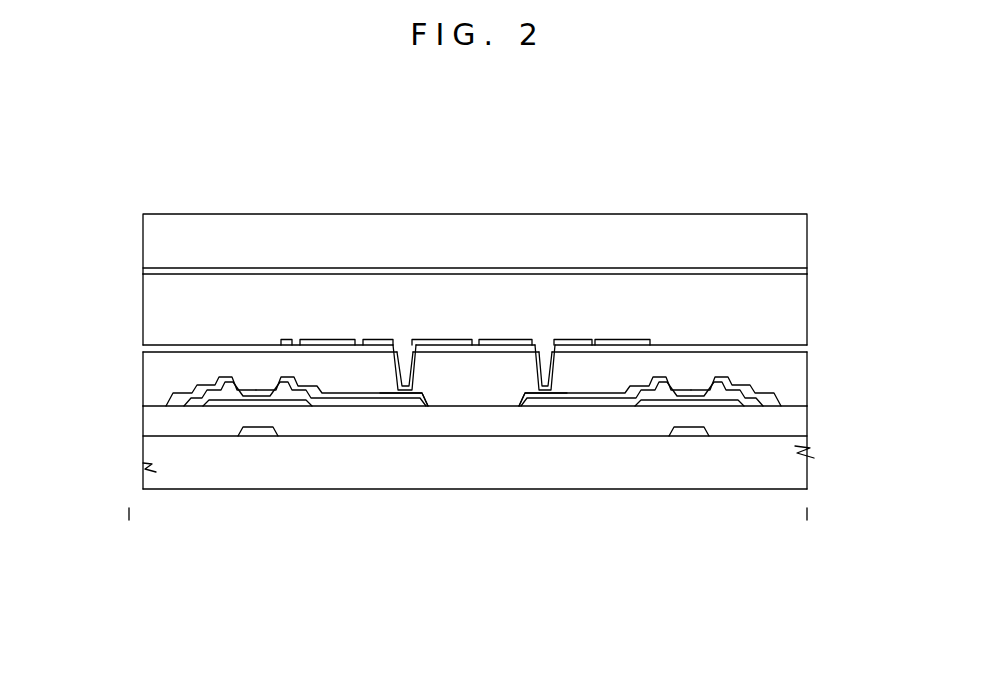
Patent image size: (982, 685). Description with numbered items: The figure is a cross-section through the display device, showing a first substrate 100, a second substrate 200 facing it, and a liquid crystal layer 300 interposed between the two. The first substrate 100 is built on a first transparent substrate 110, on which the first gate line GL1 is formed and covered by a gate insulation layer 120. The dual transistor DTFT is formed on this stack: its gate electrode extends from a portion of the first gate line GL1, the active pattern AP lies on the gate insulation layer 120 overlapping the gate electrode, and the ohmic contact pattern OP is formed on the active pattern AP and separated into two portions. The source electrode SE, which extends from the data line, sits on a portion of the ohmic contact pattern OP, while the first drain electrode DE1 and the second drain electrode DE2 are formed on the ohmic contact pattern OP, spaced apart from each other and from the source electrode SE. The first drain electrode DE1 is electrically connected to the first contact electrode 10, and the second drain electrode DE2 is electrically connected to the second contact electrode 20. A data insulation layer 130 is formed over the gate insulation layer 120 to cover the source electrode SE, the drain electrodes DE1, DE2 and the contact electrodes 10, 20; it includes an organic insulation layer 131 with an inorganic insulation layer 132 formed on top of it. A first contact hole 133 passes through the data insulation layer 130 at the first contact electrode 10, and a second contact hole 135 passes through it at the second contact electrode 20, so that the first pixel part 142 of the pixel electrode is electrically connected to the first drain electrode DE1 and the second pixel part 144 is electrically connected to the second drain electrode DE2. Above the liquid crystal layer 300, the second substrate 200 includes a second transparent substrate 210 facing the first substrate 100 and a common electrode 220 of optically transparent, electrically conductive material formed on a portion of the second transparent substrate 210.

The second substrate 200 is at (443, 214).
The second transparent substrate 210 is at (299, 232).
The common electrode 220 is at (379, 272).
The liquid crystal layer 300 is at (127, 276).
The first substrate 100 is at (447, 455).
The first transparent substrate 110 is at (505, 453).
The gate insulation layer 120 is at (460, 413).
The data insulation layer 130 is at (507, 345).
The organic insulation layer 131 is at (775, 367).
The inorganic insulation layer 132 is at (718, 349).
The first contact hole 133 is at (398, 350).
The second contact hole 135 is at (541, 350).
The first pixel part 142 is at (446, 338).
The second pixel part 144 is at (303, 338).
The first contact electrode 10 is at (403, 399).
The second contact electrode 20 is at (543, 476).
The source electrode SE is at (177, 403).
The active pattern AP is at (213, 403).
The first gate line GL1 is at (255, 432).
The ohmic contact pattern OP is at (297, 403).
The first drain electrode DE1 is at (333, 403).
The second drain electrode DE2 is at (600, 399).
The dual transistor DTFT is at (469, 486).